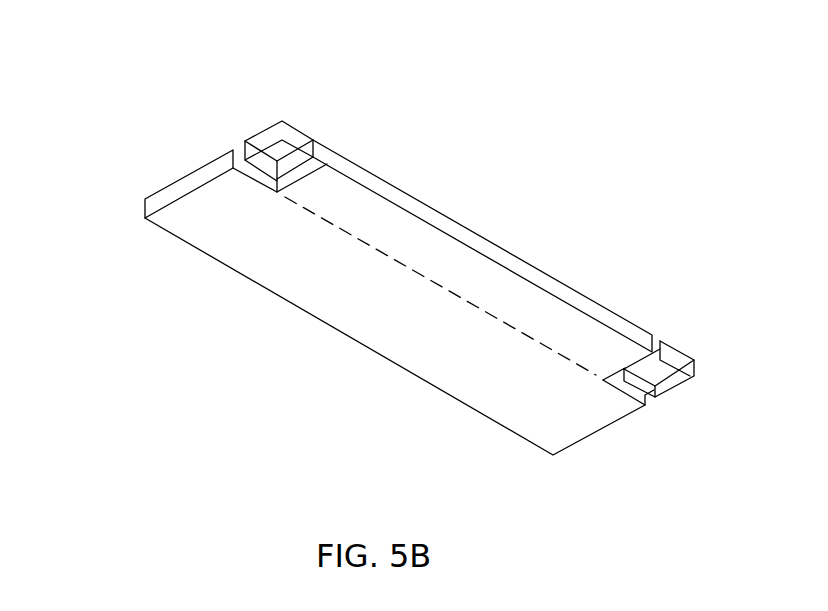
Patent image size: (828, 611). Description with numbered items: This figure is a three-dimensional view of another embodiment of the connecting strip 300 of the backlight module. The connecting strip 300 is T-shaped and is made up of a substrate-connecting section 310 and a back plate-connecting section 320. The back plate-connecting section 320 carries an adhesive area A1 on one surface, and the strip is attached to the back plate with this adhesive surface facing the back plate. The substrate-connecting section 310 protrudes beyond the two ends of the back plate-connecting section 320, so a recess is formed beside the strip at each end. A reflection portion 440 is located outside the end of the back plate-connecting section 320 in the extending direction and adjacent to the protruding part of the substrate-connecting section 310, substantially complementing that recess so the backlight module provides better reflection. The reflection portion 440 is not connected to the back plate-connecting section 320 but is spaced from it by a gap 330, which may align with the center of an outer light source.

The connecting strip 300 is at (167, 159).
The substrate-connecting section 310 is at (143, 210).
The back plate-connecting section 320 is at (398, 187).
The gap 330 is at (658, 338).
The reflection portion 440 is at (303, 133).
The adhesive area A1 is at (450, 271).